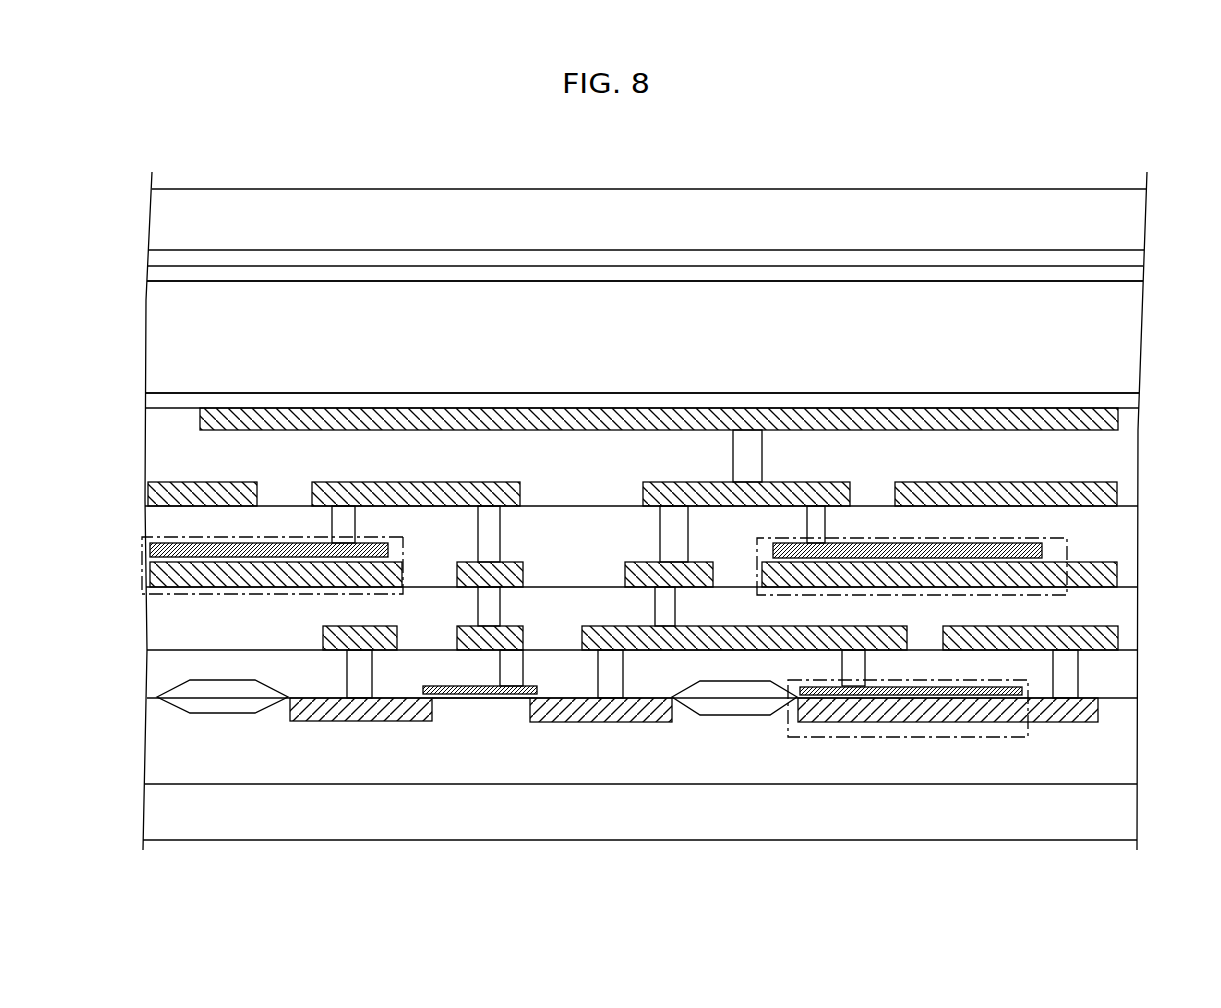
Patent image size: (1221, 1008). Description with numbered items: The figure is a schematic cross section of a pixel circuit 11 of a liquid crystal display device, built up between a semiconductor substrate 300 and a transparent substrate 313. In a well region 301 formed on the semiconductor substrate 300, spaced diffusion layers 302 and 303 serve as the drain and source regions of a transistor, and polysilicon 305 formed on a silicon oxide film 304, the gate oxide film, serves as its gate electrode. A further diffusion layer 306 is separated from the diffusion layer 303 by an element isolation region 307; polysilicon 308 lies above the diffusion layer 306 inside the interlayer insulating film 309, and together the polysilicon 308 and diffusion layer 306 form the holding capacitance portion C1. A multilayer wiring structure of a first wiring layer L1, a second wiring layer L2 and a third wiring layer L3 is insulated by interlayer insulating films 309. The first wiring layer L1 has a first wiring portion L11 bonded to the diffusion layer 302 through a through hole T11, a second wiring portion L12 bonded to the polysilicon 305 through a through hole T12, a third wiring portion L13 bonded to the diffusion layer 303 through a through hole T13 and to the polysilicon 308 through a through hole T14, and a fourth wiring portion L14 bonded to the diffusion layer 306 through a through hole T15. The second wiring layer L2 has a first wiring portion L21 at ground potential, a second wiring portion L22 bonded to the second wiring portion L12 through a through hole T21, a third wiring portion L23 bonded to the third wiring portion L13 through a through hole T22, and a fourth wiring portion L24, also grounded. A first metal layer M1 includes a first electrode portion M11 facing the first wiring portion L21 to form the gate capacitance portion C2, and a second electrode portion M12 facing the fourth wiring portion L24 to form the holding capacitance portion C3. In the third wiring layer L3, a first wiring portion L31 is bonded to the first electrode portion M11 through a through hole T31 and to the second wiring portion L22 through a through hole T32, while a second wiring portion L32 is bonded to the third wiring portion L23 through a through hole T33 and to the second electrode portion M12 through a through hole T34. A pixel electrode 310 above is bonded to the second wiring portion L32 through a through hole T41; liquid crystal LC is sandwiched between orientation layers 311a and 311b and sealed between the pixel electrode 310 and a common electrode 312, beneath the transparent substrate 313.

The pixel circuit 11 is at (716, 163).
The transparent substrate 313 is at (1133, 229).
The common electrode 312 is at (1133, 266).
The orientation layer 311b is at (1131, 287).
The liquid crystal LC is at (1131, 350).
The orientation layer 311a is at (1131, 404).
The pixel electrode 310 is at (1121, 432).
The interlayer insulating film 309 is at (1131, 470).
The well region 301 is at (1131, 750).
The semiconductor substrate 300 is at (1131, 817).
The third wiring layer L3 is at (600, 516).
The first metal layer M1 is at (243, 517).
The second wiring layer L2 is at (646, 551).
The first wiring layer L1 is at (646, 626).
The gate capacitance portion C2 is at (189, 537).
The holding capacitance portion C3 is at (1060, 540).
The holding capacitance portion C1 is at (826, 742).
The first electrode portion M11 is at (288, 546).
The second electrode portion M12 is at (990, 546).
The first wiring portion L31 is at (523, 495).
The second wiring portion L32 is at (853, 488).
The first wiring portion L21 is at (403, 572).
The second wiring portion L22 is at (525, 573).
The third wiring portion L23 is at (640, 568).
The fourth wiring portion L24 is at (1119, 582).
The first wiring portion L11 is at (323, 632).
The second wiring portion L12 is at (528, 630).
The third wiring portion L13 is at (908, 630).
The fourth wiring portion L14 is at (1119, 645).
The through hole T41 is at (765, 458).
The through hole T31 is at (353, 524).
The through hole T32 is at (500, 528).
The through hole T33 is at (688, 528).
The through hole T34 is at (826, 528).
The through hole T21 is at (478, 606).
The through hole T22 is at (676, 616).
The through hole T11 is at (372, 672).
The through hole T12 is at (502, 672).
The through hole T13 is at (622, 672).
The through hole T14 is at (862, 672).
The through hole T15 is at (1060, 672).
The diffusion layer 302 is at (362, 705).
The diffusion layer 303 is at (602, 706).
The silicon oxide film 304 is at (512, 698).
The polysilicon 305 is at (448, 698).
The diffusion layer 306 is at (918, 706).
The element isolation region 307 is at (228, 700).
The polysilicon 308 is at (992, 698).